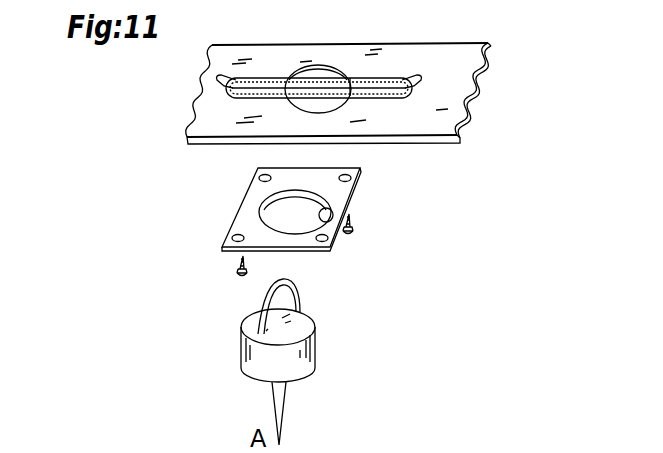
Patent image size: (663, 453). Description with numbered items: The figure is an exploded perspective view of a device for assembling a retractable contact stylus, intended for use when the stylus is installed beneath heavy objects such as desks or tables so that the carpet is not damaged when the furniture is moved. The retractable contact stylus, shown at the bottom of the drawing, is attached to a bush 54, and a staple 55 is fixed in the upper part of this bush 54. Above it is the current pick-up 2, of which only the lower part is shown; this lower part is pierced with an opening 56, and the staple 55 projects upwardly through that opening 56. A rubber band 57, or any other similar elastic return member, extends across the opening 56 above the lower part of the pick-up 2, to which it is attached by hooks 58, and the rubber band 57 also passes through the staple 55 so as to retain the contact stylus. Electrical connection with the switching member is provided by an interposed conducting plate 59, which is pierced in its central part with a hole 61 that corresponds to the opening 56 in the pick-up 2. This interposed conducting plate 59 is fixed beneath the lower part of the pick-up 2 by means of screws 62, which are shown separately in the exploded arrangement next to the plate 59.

The current pick-up 2 is at (483, 44).
The bush 54 is at (241, 356).
The staple 55 is at (299, 296).
The opening 56 is at (318, 69).
The rubber band 57 is at (268, 80).
The hooks 58 is at (228, 77).
The interposed conducting plate 59 is at (248, 190).
The hole 61 is at (329, 207).
The screws 62 is at (234, 268).